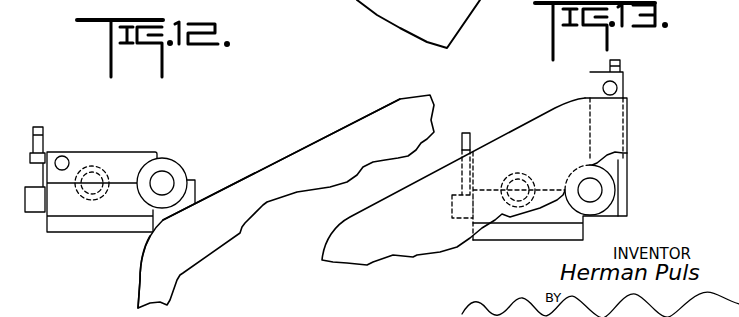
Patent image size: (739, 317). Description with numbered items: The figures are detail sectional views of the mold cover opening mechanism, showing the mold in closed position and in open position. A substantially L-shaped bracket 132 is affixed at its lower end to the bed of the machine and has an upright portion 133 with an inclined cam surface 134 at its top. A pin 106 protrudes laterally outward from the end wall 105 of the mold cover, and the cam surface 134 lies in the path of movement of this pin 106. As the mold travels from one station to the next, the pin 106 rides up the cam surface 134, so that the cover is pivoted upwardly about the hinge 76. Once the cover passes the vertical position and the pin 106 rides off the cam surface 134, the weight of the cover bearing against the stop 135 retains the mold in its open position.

In FIG. 12, the hinge 76 is at (168, 160).
In FIG. 13, the hinge 76 is at (616, 178).
In FIG. 12, the end wall 105 is at (123, 160).
In FIG. 12, the pin 106 is at (65, 157).
In FIG. 13, the pin 106 is at (617, 88).
In FIG. 12, the L-shaped bracket 132 is at (388, 100).
In FIG. 12, the upright portion 133 is at (138, 281).
In FIG. 12, the cam surface 134 is at (267, 167).
In FIG. 13, the cam surface 134 is at (515, 125).
In FIG. 12, the stop 135 is at (195, 192).
In FIG. 13, the stop 135 is at (628, 203).